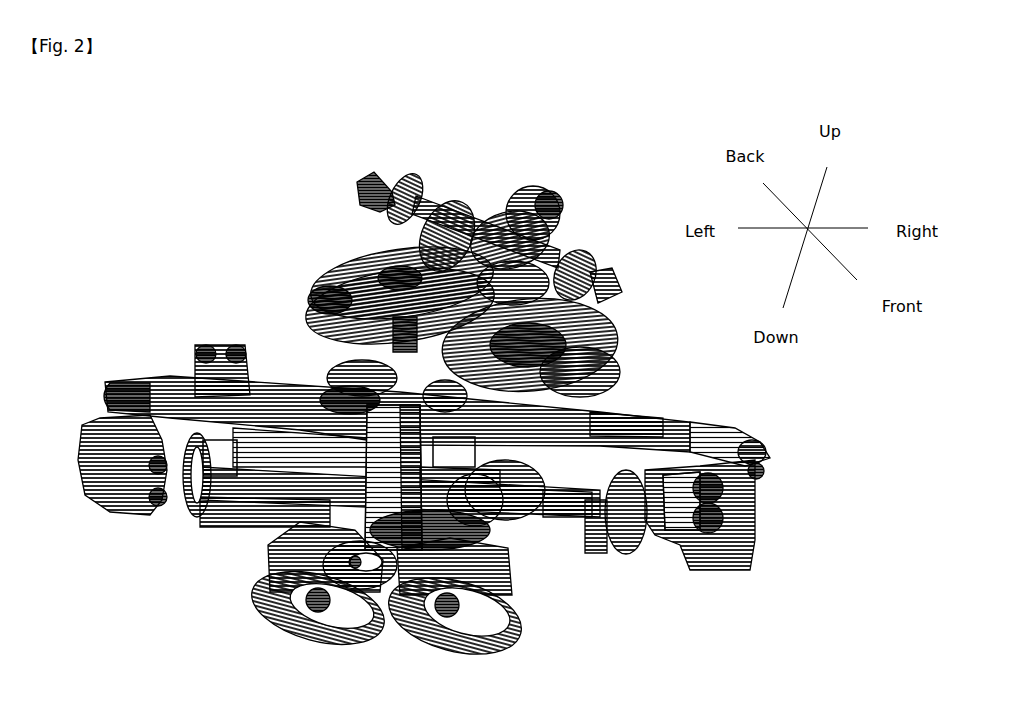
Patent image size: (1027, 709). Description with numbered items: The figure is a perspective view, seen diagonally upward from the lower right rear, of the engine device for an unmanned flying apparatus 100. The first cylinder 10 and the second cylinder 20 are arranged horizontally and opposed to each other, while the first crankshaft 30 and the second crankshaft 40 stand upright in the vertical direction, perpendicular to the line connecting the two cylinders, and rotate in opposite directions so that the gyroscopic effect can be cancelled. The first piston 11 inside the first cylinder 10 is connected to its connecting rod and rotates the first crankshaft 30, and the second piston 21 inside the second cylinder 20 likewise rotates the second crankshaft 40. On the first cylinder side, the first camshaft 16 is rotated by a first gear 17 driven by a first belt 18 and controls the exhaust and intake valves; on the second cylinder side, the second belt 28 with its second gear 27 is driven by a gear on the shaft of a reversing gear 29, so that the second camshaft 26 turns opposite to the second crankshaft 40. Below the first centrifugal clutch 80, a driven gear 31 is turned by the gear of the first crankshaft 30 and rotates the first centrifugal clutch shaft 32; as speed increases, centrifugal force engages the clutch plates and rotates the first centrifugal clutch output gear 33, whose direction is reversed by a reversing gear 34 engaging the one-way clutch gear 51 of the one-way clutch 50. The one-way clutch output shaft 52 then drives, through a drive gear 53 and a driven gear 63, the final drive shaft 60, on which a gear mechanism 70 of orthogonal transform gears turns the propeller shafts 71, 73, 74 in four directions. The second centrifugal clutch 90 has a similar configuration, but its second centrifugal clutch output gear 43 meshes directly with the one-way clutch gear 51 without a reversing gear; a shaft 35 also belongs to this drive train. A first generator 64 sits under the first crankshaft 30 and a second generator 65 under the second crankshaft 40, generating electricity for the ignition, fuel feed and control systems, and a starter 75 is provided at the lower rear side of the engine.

The first cylinder 10 is at (183, 528).
The first piston 11 is at (158, 500).
The first camshaft 16 is at (105, 410).
The first gear 17 is at (107, 397).
The first belt 18 is at (163, 378).
The second cylinder 20 is at (652, 565).
The second piston 21 is at (590, 500).
The second camshaft 26 is at (764, 474).
The second gear 27 is at (765, 446).
The second belt 28 is at (700, 420).
The reversing gear 29 is at (600, 420).
The first crankshaft 30 is at (323, 511).
The driven gear 31 is at (340, 372).
The first centrifugal clutch shaft 32 is at (345, 340).
The first centrifugal clutch output gear 33 is at (322, 298).
The reversing gear 34 is at (400, 243).
The shaft 35 is at (408, 433).
The second crankshaft 40 is at (510, 553).
The second centrifugal clutch output gear 43 is at (617, 343).
The one-way clutch 50 is at (537, 318).
The one-way clutch gear 51 is at (607, 317).
The one-way clutch output shaft 52 is at (617, 278).
The drive gear 53 is at (563, 225).
The final drive shaft 60 is at (480, 203).
The driven gear 63 is at (435, 248).
The first generator 64 is at (260, 597).
The second generator 65 is at (527, 603).
The gear mechanism 70 is at (462, 187).
The propeller shaft 71 is at (563, 257).
The propeller shaft 73 is at (440, 183).
The propeller shaft 74 is at (527, 205).
The starter 75 is at (413, 600).
The first centrifugal clutch 80 is at (285, 240).
The second centrifugal clutch 90 is at (620, 360).
The engine device for an unmanned flying apparatus 100 is at (648, 168).